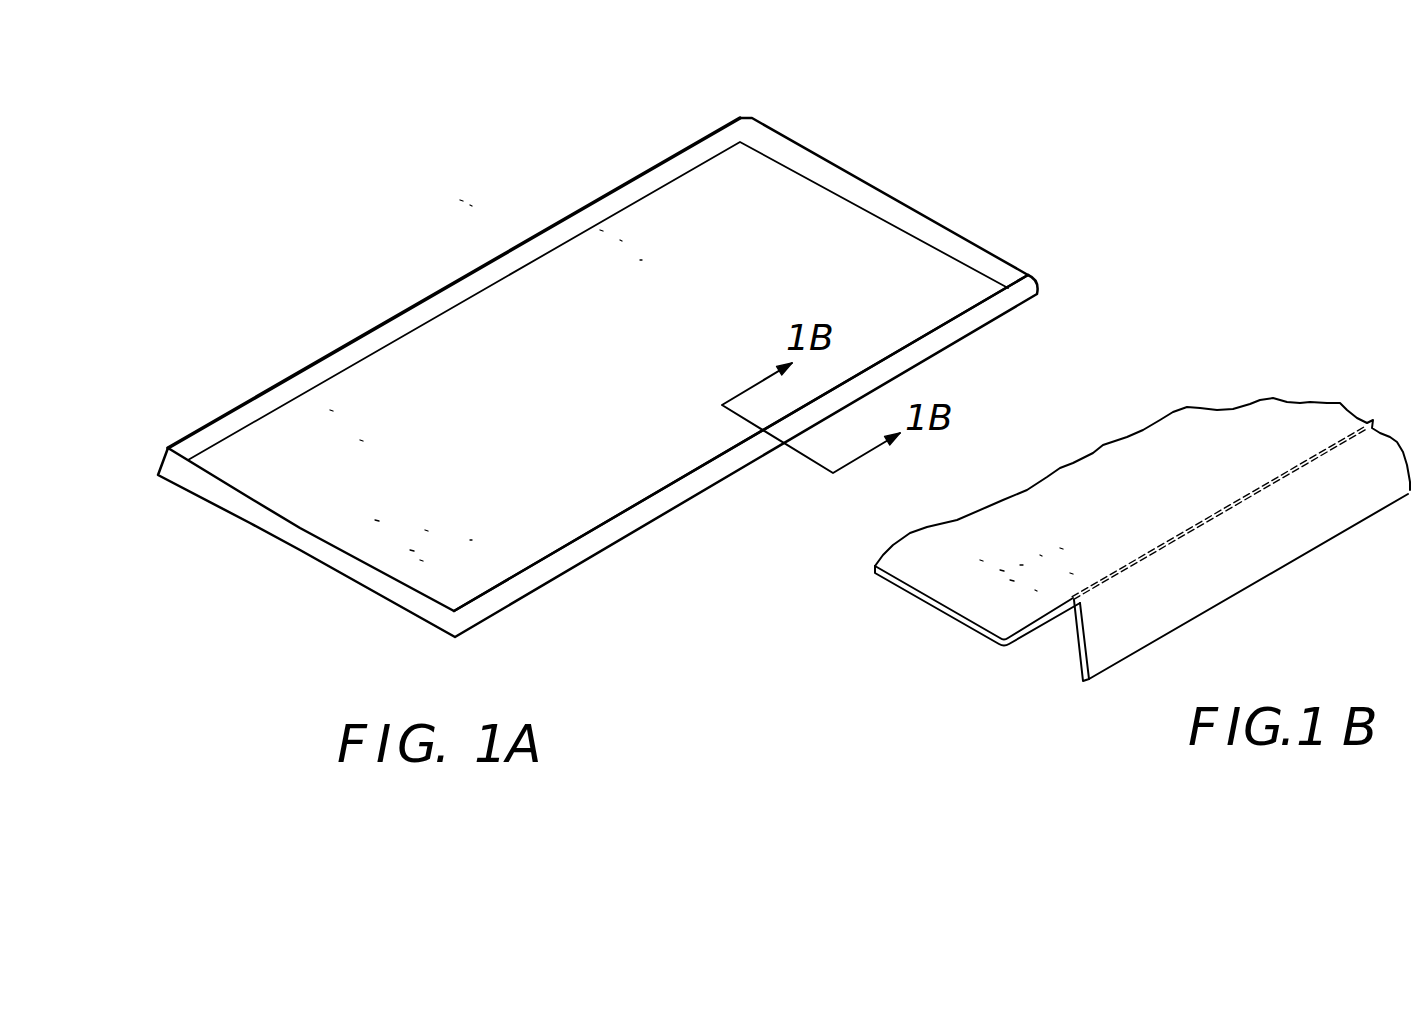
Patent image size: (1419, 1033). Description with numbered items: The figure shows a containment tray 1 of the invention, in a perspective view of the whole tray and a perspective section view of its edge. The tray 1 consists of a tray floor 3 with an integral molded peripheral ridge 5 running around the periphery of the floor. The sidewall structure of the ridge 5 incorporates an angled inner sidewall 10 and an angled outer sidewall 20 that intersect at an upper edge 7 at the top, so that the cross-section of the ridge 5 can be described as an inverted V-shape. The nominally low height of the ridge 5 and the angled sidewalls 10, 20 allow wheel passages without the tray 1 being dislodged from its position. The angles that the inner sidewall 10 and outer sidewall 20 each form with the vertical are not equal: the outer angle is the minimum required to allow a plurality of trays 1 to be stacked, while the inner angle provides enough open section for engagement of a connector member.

In FIG. 1A, the tray 1 is at (303, 575).
In FIG. 1A, the tray floor 3 is at (361, 414).
In FIG. 1A, the peripheral ridge 5 is at (862, 177).
In FIG. 1B, the upper edge 7 is at (1279, 481).
In FIG. 1A, the inner sidewall 10 is at (538, 247).
In FIG. 1B, the inner sidewall 10 is at (1037, 622).
In FIG. 1A, the outer sidewall 20 is at (605, 537).
In FIG. 1B, the outer sidewall 20 is at (1081, 652).